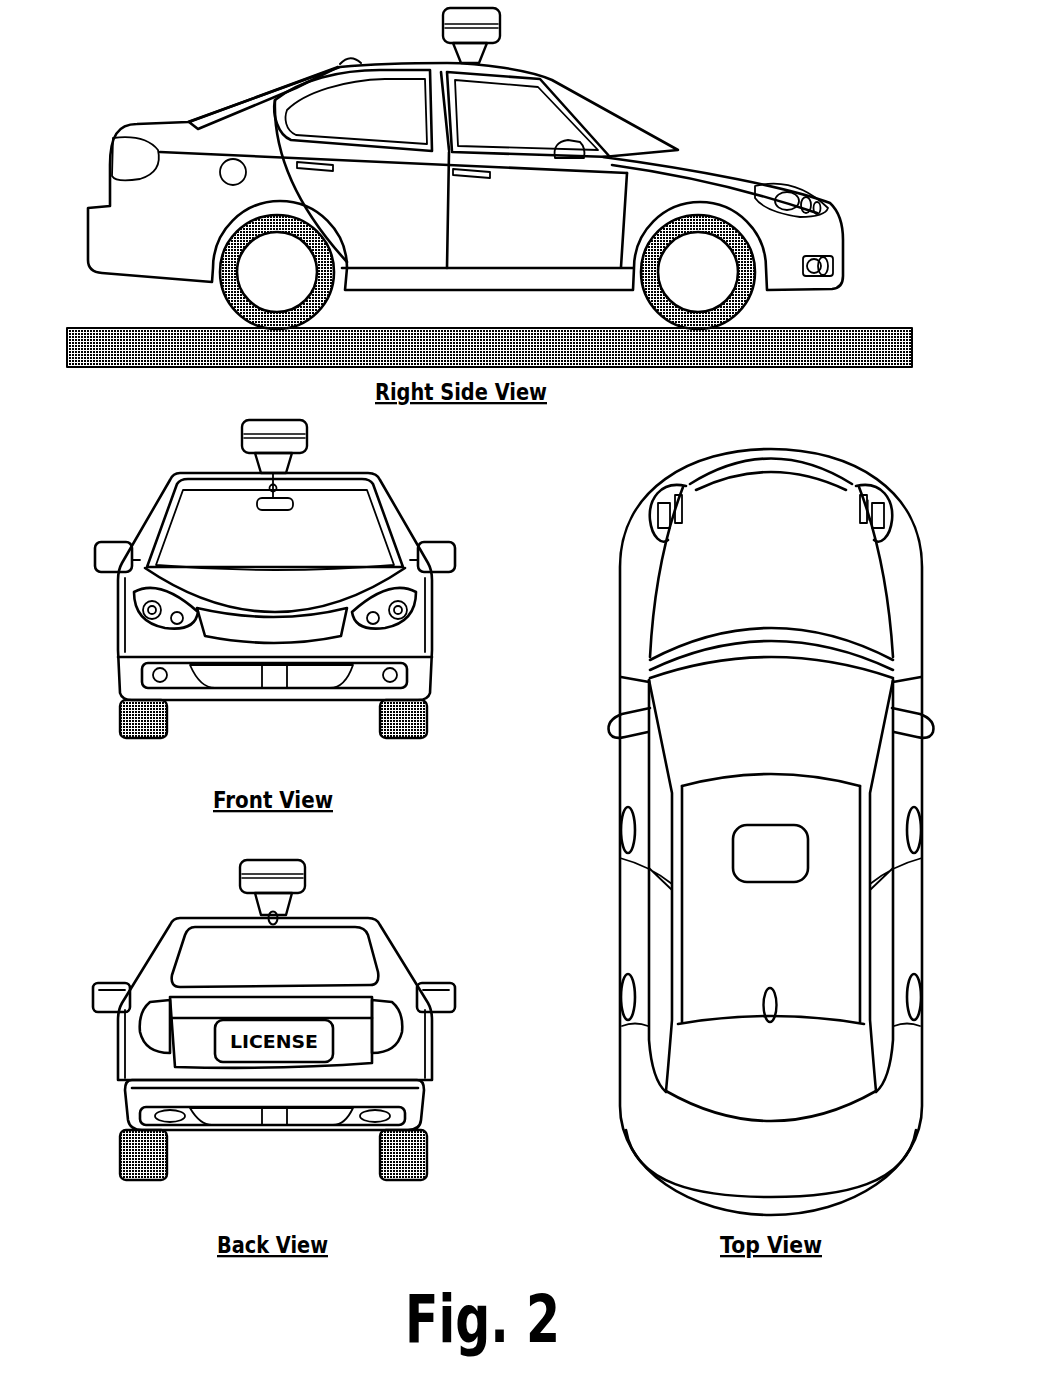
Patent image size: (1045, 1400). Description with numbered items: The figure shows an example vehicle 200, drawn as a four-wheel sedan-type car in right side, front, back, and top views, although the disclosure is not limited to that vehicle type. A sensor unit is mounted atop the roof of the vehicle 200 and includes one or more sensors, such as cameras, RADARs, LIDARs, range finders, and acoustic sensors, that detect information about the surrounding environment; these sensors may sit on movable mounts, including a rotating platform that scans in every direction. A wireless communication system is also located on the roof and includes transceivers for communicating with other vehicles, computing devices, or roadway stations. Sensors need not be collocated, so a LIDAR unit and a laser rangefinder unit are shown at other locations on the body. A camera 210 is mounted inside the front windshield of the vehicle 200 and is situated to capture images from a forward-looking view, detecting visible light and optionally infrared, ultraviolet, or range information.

The vehicle 200 is at (80, 113).
The camera 210 is at (293, 498).